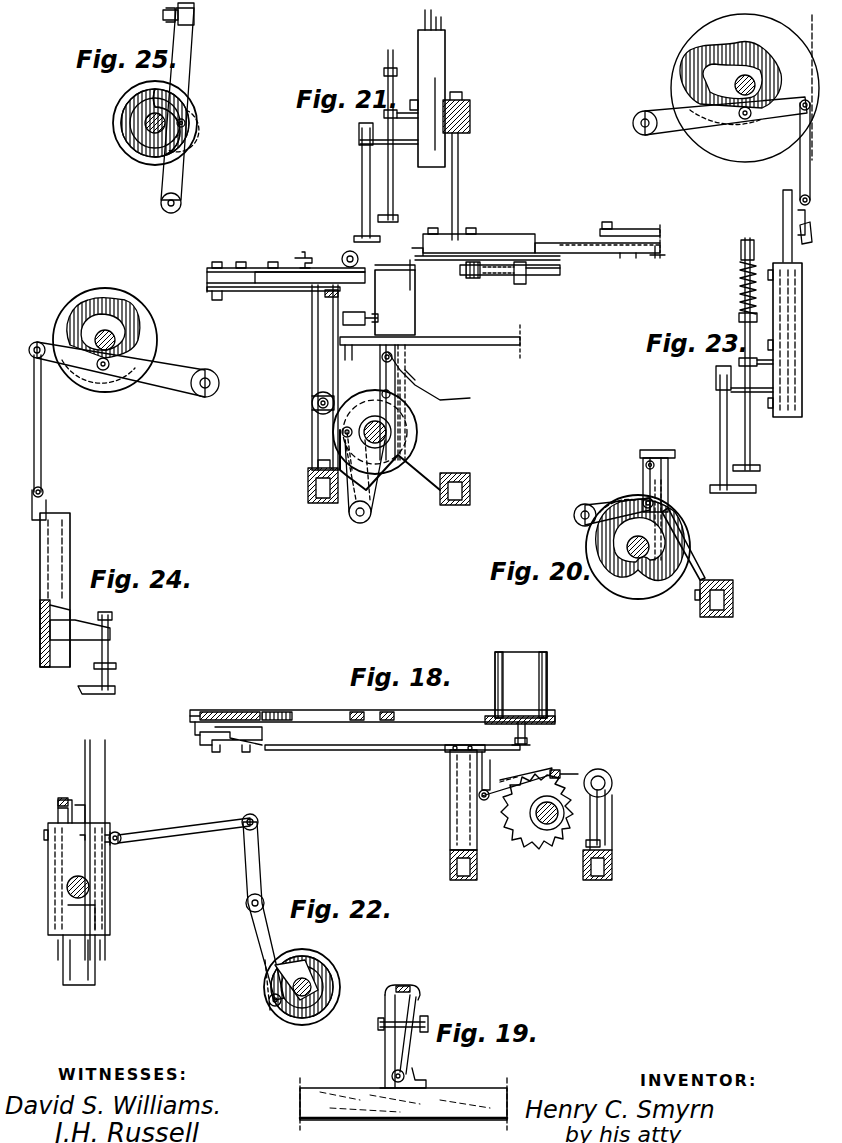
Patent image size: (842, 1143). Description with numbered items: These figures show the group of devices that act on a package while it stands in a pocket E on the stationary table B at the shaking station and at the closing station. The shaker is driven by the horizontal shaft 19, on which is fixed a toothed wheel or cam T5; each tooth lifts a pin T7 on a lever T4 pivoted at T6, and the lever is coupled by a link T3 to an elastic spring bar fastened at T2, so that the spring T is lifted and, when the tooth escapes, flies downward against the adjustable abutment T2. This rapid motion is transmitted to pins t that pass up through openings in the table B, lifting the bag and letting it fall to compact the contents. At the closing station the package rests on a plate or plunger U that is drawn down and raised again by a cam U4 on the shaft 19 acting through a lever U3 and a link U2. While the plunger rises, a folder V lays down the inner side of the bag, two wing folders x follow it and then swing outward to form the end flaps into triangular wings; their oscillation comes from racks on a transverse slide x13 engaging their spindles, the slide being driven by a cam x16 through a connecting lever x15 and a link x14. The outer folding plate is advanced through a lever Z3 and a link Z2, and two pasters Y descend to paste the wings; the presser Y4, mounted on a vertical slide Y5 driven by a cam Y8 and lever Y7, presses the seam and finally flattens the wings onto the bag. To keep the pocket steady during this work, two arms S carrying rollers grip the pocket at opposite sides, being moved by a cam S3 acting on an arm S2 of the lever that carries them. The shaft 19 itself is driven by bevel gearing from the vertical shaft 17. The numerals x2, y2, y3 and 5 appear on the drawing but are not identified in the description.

In FIG. 25, the horizontal shaft 19 is at (133, 123).
In FIG. 25, the arms or fingers S is at (163, 14).
In FIG. 25, the arm of lever S2 is at (178, 140).
In FIG. 25, the cam S3 is at (196, 123).
In FIG. 21, the pasters Y is at (425, 16).
In FIG. 21, the presser Y4 is at (393, 200).
In FIG. 21, the vertical slide Y5 is at (446, 24).
In FIG. 24, the connecting lever Y7 is at (160, 382).
In FIG. 24, the cam Y8 is at (143, 318).
In FIG. 21, the link Z2 is at (252, 292).
In FIG. 21, the connecting lever Z3 is at (322, 298).
In FIG. 21, the pocket E is at (395, 300).
In FIG. 21, the stationary horizontal table B is at (365, 348).
In FIG. 21, the folder V is at (418, 272).
In FIG. 21, the wing folders x is at (425, 272).
In FIG. 21, the collar x2 is at (490, 278).
In FIG. 21, the transverse slide x13 is at (535, 278).
In FIG. 22, the link x14 is at (200, 825).
In FIG. 22, the connecting lever x15 is at (262, 875).
In FIG. 22, the cam x16 is at (340, 985).
In FIG. 21, the bar y2 is at (590, 238).
In FIG. 21, the bar y3 is at (633, 233).
In FIG. 21, the part 5 is at (463, 313).
In FIG. 21, the plate or plunger U is at (437, 380).
In FIG. 21, the link U2 is at (392, 366).
In FIG. 21, the lever U3 is at (330, 400).
In FIG. 20, the cam U4 is at (632, 598).
In FIG. 18, the spring T is at (360, 748).
In FIG. 18, the adjustable rest or abutment T2 is at (446, 798).
In FIG. 18, the link T3 is at (494, 766).
In FIG. 18, the lever T4 is at (530, 770).
In FIG. 18, the toothed wheel or cam T5 is at (520, 812).
In FIG. 18, the pivot T6 is at (612, 795).
In FIG. 18, the pin T7 is at (558, 770).
In FIG. 18, the pins t is at (528, 730).
In FIG. 22, the vertical shaft 17 is at (312, 980).